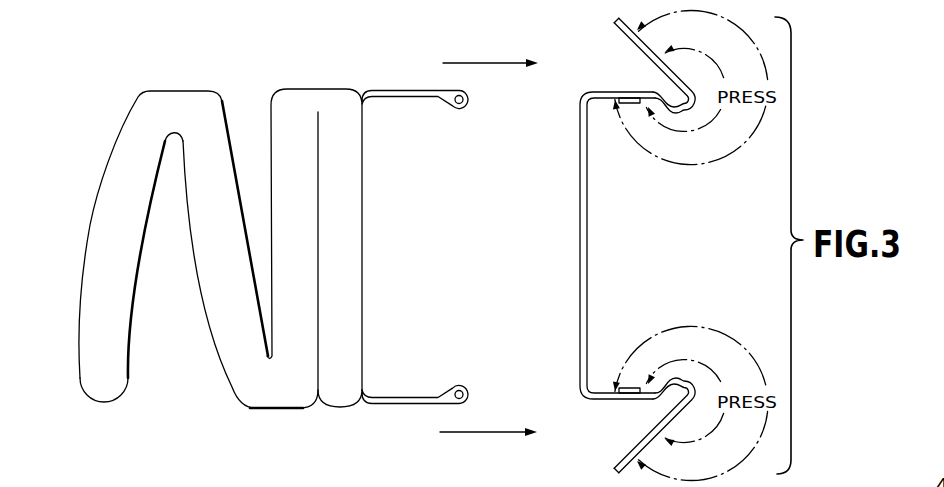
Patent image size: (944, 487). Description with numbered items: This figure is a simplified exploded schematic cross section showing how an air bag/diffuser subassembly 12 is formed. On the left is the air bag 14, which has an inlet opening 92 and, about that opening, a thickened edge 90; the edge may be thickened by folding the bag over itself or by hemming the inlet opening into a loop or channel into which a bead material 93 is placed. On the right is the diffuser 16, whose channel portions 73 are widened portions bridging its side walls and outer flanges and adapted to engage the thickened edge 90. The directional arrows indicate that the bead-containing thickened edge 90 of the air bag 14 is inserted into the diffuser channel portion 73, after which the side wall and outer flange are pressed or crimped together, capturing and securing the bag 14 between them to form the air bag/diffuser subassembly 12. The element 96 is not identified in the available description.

The air bag/diffuser subassembly 12 is at (320, 486).
The air bag 14 is at (98, 190).
The diffuser 16 is at (588, 230).
The channel portion 73 is at (697, 112).
The thickened edge 90 is at (397, 90).
The inlet opening 92 is at (436, 297).
The bead material 93 is at (461, 110).
The base 96 is at (811, 480).